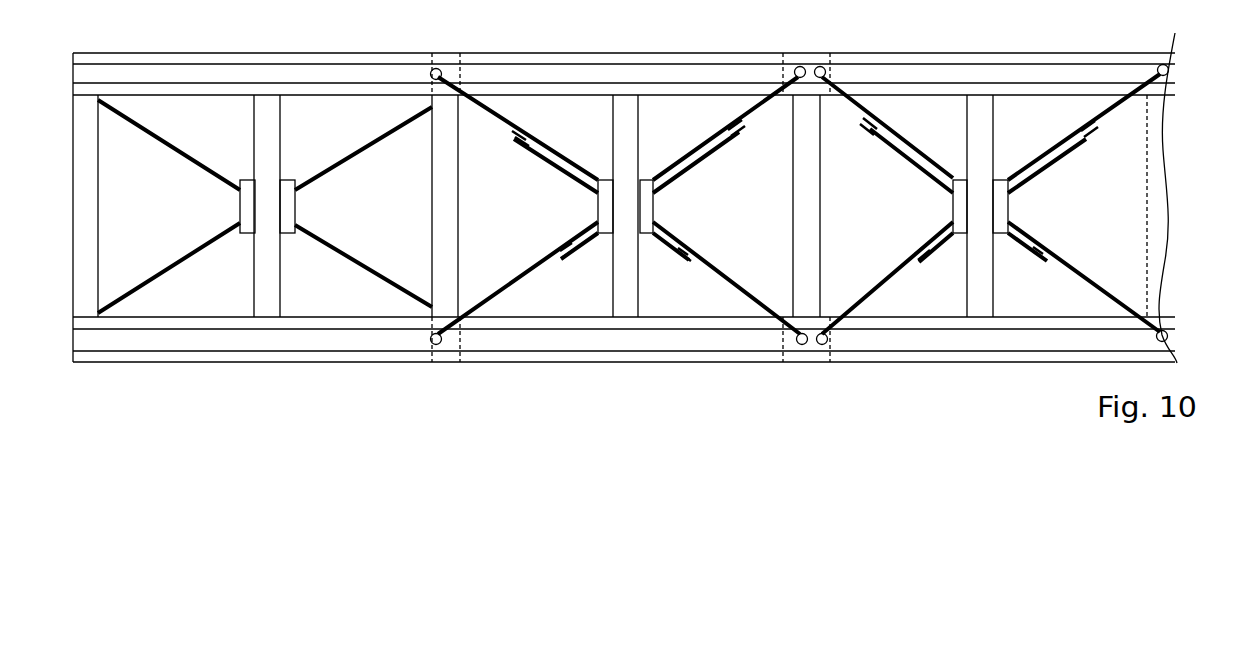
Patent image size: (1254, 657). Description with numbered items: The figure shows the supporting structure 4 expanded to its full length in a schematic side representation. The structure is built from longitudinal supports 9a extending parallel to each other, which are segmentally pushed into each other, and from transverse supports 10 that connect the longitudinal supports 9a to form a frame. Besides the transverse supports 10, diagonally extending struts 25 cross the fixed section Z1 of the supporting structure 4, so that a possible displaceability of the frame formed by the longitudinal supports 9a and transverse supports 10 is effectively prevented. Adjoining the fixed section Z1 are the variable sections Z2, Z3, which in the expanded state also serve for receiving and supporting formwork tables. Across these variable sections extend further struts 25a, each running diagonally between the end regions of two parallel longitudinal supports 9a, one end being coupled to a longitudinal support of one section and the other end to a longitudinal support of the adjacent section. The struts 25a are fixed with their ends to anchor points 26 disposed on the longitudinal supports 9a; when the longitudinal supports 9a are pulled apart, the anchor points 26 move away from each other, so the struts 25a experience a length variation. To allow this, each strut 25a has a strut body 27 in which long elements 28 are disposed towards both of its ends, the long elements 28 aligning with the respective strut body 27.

The supporting structure 4 is at (1183, 135).
The longitudinal supports 9a is at (172, 78).
The transverse supports 10 is at (630, 135).
The struts 25 is at (185, 162).
The struts 25a is at (532, 163).
The anchor points 26 is at (430, 77).
The strut body 27 is at (578, 182).
The long elements 28 is at (485, 112).
The fixed section Z1 is at (340, 147).
The variable section Z2 is at (728, 127).
The variable section Z3 is at (1080, 127).